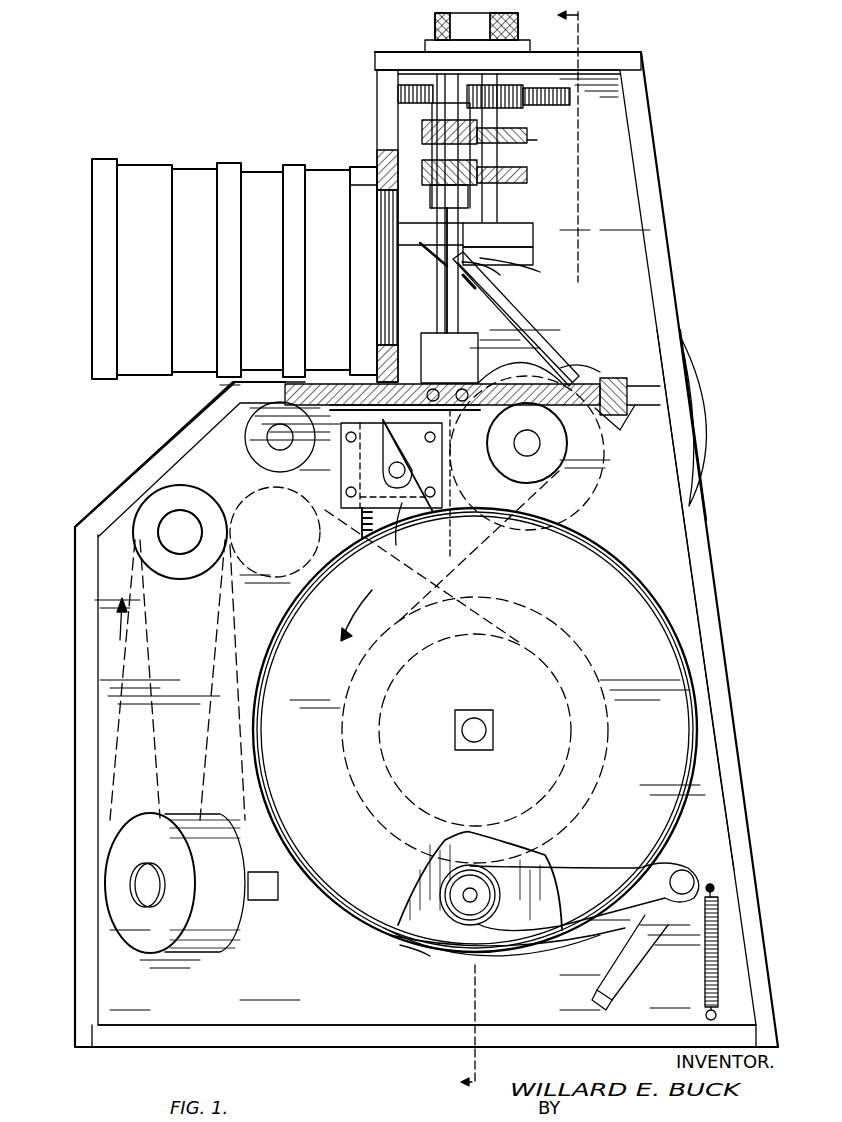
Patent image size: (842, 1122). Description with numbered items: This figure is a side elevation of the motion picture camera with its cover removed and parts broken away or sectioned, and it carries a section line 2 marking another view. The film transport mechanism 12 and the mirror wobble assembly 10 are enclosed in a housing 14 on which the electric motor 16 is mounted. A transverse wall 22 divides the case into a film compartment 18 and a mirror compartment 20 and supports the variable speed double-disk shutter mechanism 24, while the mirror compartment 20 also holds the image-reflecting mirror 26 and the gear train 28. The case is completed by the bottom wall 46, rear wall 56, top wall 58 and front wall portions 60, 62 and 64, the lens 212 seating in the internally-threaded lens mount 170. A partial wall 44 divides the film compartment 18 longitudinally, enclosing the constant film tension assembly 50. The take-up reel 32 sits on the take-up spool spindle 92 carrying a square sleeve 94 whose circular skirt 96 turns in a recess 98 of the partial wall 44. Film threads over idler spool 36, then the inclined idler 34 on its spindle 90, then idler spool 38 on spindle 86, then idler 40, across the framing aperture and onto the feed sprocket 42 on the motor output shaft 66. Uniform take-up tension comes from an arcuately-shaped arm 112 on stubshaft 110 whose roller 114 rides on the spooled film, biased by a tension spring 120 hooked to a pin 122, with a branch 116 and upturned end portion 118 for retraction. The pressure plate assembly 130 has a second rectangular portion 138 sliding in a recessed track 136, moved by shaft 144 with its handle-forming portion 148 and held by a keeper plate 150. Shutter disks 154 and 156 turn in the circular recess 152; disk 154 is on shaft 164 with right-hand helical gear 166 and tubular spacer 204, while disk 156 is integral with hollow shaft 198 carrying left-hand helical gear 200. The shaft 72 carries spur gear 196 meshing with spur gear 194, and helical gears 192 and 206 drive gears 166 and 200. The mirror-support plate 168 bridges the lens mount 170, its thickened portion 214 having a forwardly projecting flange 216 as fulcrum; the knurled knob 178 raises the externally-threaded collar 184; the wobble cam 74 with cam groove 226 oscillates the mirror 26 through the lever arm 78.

The section line 2 is at (525, 556).
The mirror wobble assembly 10 is at (372, 935).
The film transport mechanism 12 is at (520, 318).
The housing 14 is at (710, 613).
The electric motor 16 is at (700, 408).
The film compartment 18 is at (427, 987).
The mirror compartment 20 is at (649, 411).
The transverse wall 22 is at (652, 388).
The variable speed double-disk shutter mechanism 24 is at (300, 378).
The image-reflecting mirror 26 is at (432, 252).
The gear train 28 is at (530, 140).
The take-up reel 32 is at (700, 738).
The inclined idler 34 is at (200, 945).
The idler spool 36 is at (257, 572).
The idler spool 38 is at (205, 505).
The idler 40 is at (270, 450).
The feed sprocket 42 is at (570, 478).
The partial wall 44 is at (672, 566).
The bottom wall 46 is at (398, 1047).
The constant film tension assembly 50 is at (577, 950).
The rear wall 56 is at (722, 656).
The top wall 58 is at (638, 62).
The front wall portion 60 is at (75, 802).
The front wall portion 62 is at (170, 450).
The front wall portion 64 is at (377, 86).
The output shaft 66 is at (520, 447).
The shaft 72 is at (485, 280).
The wobble cam 74 is at (565, 378).
The lever arm 78 is at (525, 345).
The spindle 86 is at (176, 535).
The spindle 90 is at (146, 898).
The take-up spool spindle 92 is at (470, 742).
The sleeve 94 is at (493, 720).
The circular skirt 96 is at (396, 950).
The recess 98 is at (420, 960).
The stubshaft 110 is at (686, 874).
The arcuately-shaped arm 112 is at (584, 897).
The roller 114 is at (455, 915).
The branch 116 is at (628, 976).
The upturned end portion 118 is at (600, 1003).
The tension spring 120 is at (718, 925).
The pin 122 is at (497, 214).
The pressure plate assembly 130 is at (340, 474).
The recessed track 136 is at (362, 542).
The second rectangular portion 138 is at (360, 392).
The shaft 144 is at (415, 462).
The handle-forming portion 148 is at (420, 505).
The keeper plate 150 is at (398, 545).
The circular recess 152 is at (612, 396).
The shutter disk 154 is at (610, 410).
The shutter disk 156 is at (588, 372).
The shaft 164 is at (445, 410).
The right-hand helical gear 166 is at (422, 128).
The mirror-support plate 168 is at (533, 235).
The lens mount 170 is at (350, 185).
The knurled knob 178 is at (435, 22).
The externally-threaded collar 184 is at (472, 82).
The left-hand helical gear 192 is at (522, 130).
The spur gear 194 is at (505, 85).
The spur gear 196 is at (570, 98).
The hollow shaft 198 is at (447, 300).
The left-hand helical gear 200 is at (377, 160).
The tubular spacer 204 is at (418, 85).
The right-hand helical gear 206 is at (527, 176).
The lens 212 is at (198, 185).
The thickened portion 214 is at (533, 255).
The forwardly projecting flange 216 is at (525, 268).
The cam groove 226 is at (470, 400).